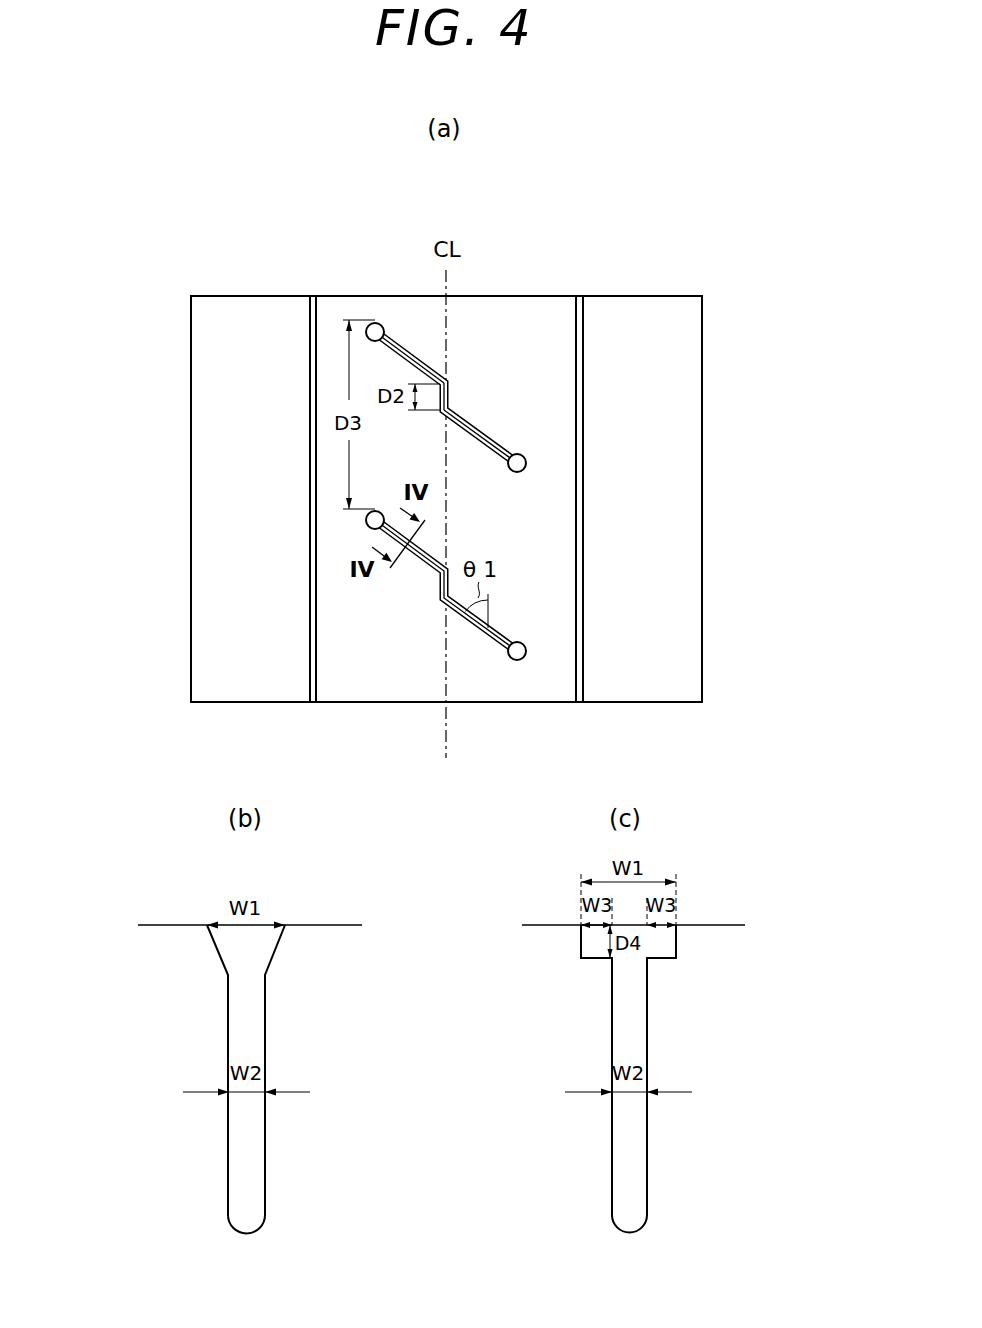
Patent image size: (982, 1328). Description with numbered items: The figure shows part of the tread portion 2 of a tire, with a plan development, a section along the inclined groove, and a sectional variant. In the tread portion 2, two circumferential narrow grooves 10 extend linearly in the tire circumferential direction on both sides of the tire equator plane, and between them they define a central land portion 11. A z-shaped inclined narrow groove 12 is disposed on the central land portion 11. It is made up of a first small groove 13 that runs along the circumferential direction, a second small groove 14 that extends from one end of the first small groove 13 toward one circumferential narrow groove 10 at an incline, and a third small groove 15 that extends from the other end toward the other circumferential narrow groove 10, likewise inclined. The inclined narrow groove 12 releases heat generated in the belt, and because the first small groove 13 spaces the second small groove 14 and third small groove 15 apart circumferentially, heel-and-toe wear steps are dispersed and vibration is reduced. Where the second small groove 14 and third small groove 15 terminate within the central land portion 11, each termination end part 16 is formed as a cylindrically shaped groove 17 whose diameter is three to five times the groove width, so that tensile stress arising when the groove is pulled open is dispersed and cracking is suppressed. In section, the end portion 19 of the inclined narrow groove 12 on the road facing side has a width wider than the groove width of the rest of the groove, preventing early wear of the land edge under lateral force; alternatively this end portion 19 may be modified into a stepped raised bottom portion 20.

The tread portion 2 is at (259, 325).
The circumferential narrow groove 10 is at (310, 525).
The central land portion 11 is at (538, 323).
The inclined narrow groove 12 is at (453, 702).
The first small groove 13 is at (453, 390).
The second small groove 14 is at (385, 630).
The third small groove 15 is at (488, 423).
The termination end part 16 is at (561, 634).
The cylindrically shaped groove 17 is at (514, 661).
The end portion on a road facing side of inclined narrow groove 19 is at (275, 955).
The raised bottom portion 20 is at (586, 952).